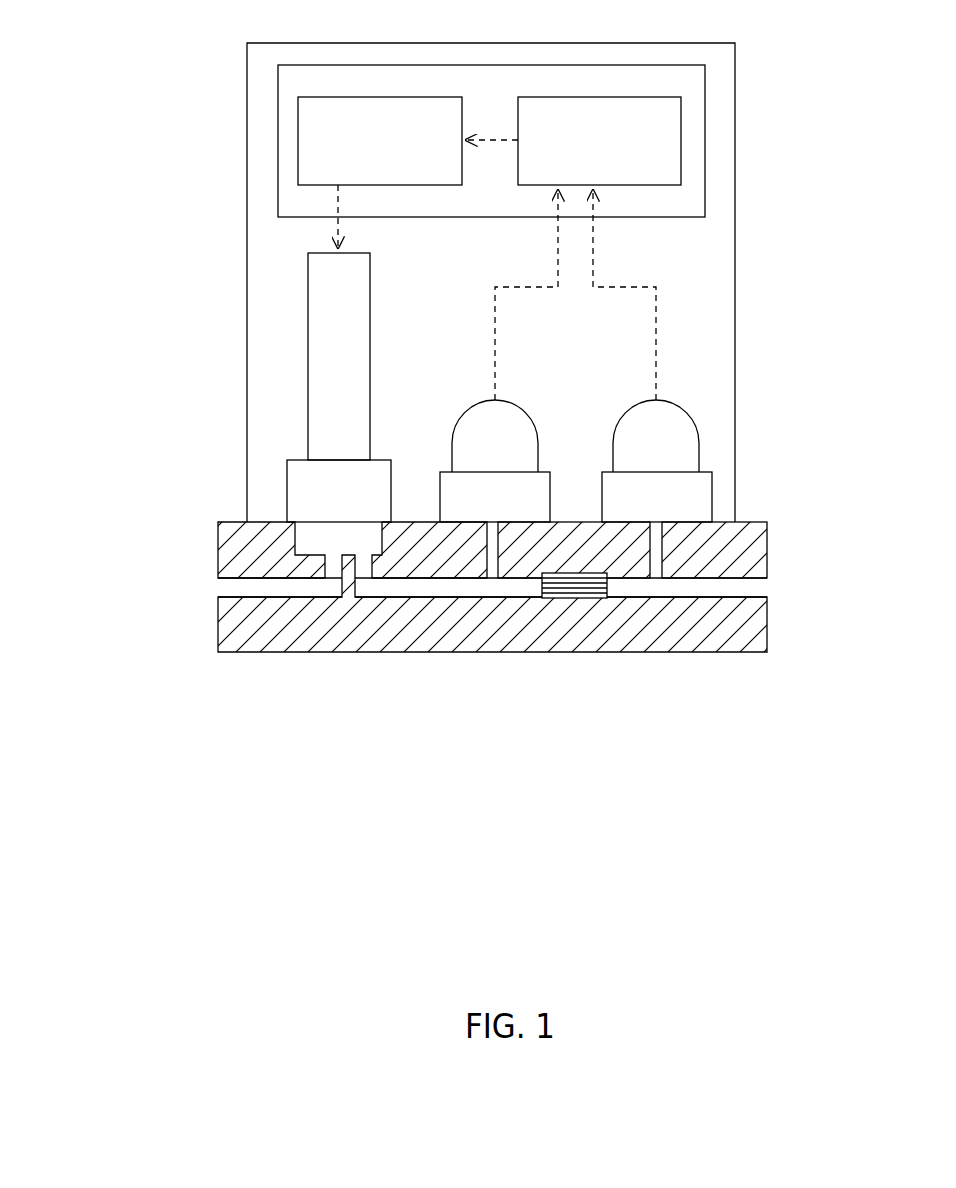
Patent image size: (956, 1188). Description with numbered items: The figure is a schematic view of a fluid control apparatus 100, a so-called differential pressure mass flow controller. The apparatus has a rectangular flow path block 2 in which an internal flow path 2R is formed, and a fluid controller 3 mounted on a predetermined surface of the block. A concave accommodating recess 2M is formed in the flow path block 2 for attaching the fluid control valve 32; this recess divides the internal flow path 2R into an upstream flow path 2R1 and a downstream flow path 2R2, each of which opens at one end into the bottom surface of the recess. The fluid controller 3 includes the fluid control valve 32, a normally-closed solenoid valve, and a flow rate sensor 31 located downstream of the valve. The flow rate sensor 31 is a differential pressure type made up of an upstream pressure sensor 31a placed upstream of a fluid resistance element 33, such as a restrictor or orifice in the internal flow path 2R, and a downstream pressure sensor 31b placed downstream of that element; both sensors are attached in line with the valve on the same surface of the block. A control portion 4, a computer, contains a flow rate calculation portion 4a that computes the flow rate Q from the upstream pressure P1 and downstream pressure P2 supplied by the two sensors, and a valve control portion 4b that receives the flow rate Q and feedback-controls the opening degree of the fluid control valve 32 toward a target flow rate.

The fluid control apparatus 100 is at (168, 76).
The flow path block 2 is at (463, 641).
The accommodating recess 2M is at (295, 538).
The internal flow path 2R is at (492, 669).
The upstream flow path 2R1 is at (289, 588).
The downstream flow path 2R2 is at (561, 648).
The fluid controller 3 is at (303, 387).
The fluid control valve 32 is at (370, 320).
The flow rate sensor 31 is at (576, 414).
The upstream pressure sensor 31a is at (512, 402).
The downstream pressure sensor 31b is at (652, 433).
The fluid resistance element 33 is at (570, 580).
The control portion 4 is at (535, 110).
The flow rate calculation portion 4a is at (600, 97).
The valve control portion 4b is at (380, 97).
The upstream pressure P1 is at (526, 295).
The downstream pressure P2 is at (624, 295).
The flow rate Q is at (492, 123).